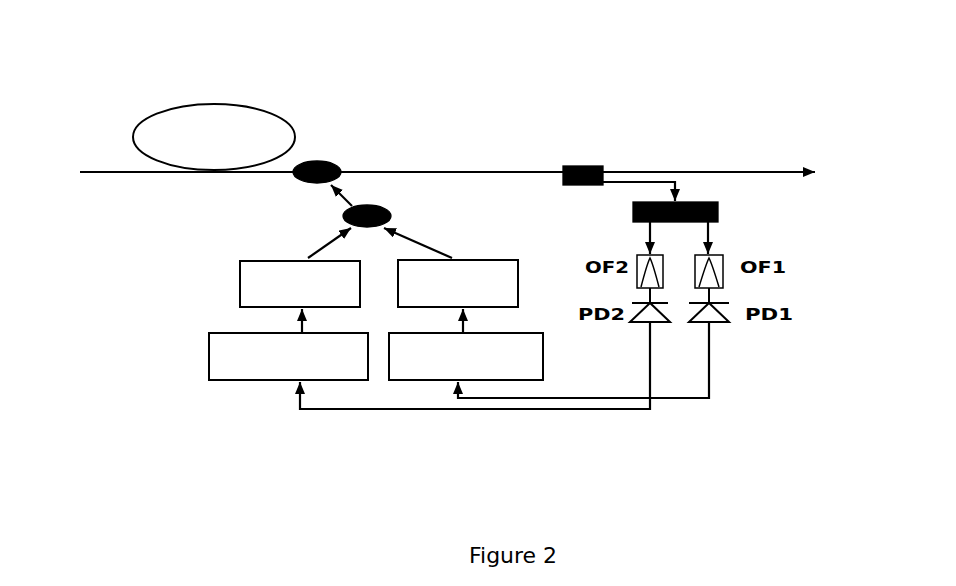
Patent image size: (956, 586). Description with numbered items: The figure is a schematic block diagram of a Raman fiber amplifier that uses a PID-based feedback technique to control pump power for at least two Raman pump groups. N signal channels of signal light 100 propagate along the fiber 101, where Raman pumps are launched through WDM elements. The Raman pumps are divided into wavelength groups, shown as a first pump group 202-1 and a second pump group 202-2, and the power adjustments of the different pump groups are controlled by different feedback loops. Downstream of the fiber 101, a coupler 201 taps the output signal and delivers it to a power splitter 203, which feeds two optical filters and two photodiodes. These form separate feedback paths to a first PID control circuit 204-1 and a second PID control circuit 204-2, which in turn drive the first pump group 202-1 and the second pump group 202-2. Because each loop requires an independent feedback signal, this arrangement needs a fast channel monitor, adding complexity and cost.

The signal light 100 is at (100, 225).
The fiber 101 is at (255, 102).
The coupler 201 is at (597, 139).
The power splitter 203 is at (688, 198).
The first pump group 202-1 is at (240, 258).
The second pump group 202-2 is at (517, 258).
The first PID control circuit 204-1 is at (240, 385).
The second PID control circuit 204-2 is at (543, 360).